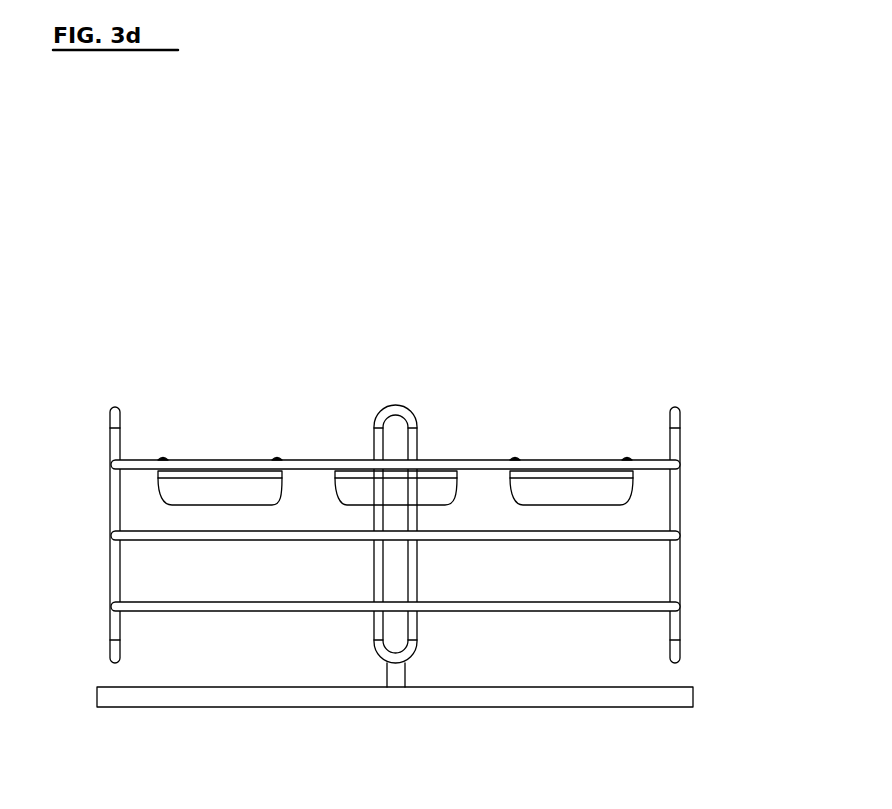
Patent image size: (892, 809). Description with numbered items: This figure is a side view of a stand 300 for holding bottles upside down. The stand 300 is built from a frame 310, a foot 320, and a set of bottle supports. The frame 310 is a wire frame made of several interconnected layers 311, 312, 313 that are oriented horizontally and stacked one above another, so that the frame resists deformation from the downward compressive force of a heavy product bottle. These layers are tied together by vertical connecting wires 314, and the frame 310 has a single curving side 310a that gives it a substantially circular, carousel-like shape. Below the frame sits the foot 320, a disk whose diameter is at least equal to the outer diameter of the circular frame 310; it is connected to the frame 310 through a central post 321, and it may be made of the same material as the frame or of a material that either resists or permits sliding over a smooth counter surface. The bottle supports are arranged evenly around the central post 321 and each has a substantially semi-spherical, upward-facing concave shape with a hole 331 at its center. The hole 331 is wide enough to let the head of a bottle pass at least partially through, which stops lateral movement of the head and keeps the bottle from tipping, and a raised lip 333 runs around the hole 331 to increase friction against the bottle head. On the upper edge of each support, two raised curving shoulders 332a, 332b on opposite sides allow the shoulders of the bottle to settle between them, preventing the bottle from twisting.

The stand 300 is at (195, 194).
The frame 310 is at (372, 547).
The curving side 310a is at (90, 500).
The interconnected layer 311 is at (645, 465).
The interconnected layer 312 is at (653, 535).
The interconnected layer 313 is at (657, 605).
The vertical connecting wire 314 is at (115, 575).
The foot 320 is at (552, 492).
The central post 321 is at (398, 680).
The hole 331 is at (225, 505).
The raised curving shoulder 332a is at (277, 457).
The raised curving shoulder 332b is at (163, 457).
The raised lip 333 is at (443, 503).